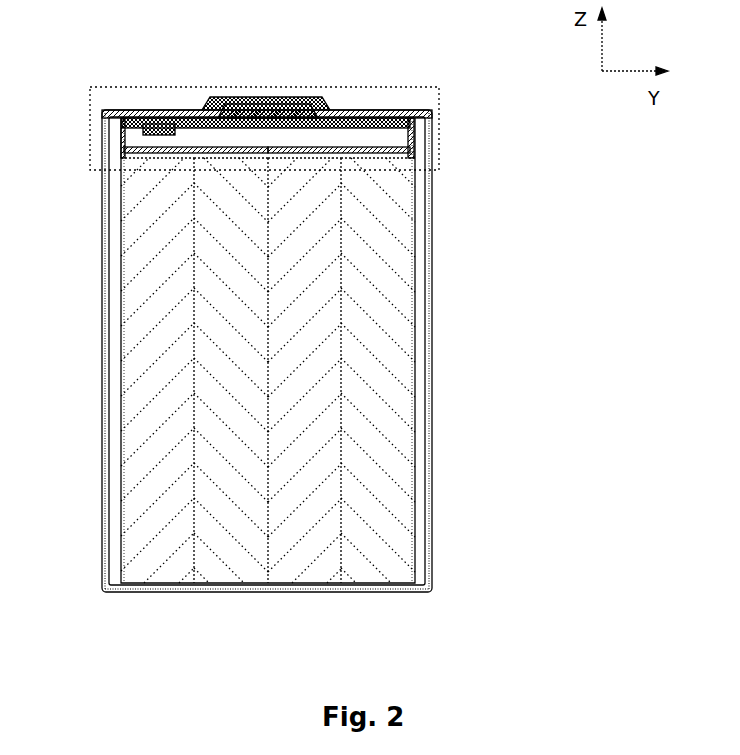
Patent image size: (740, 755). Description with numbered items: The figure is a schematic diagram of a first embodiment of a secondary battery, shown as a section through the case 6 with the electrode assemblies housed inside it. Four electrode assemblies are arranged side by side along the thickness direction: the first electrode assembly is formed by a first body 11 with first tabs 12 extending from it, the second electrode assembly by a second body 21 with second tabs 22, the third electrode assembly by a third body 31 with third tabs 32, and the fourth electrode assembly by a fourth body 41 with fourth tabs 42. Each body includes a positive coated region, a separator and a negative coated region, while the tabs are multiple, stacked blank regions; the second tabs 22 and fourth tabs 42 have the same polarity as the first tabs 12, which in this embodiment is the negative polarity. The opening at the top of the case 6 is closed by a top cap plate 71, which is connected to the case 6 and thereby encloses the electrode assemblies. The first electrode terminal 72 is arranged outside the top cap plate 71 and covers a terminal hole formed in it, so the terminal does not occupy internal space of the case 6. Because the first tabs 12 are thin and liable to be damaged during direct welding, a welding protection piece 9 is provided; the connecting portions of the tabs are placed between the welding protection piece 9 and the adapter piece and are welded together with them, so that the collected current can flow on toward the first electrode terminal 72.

The case 6 is at (432, 385).
The welding protection piece 9 is at (138, 108).
The first body 11 is at (147, 577).
The first tabs 12 is at (123, 149).
The second body 21 is at (218, 575).
The second tabs 22 is at (190, 153).
The third body 31 is at (293, 575).
The third tabs 32 is at (342, 146).
The fourth body 41 is at (367, 573).
The fourth tabs 42 is at (413, 152).
The top cap plate 71 is at (166, 122).
The first electrode terminal 72 is at (278, 95).